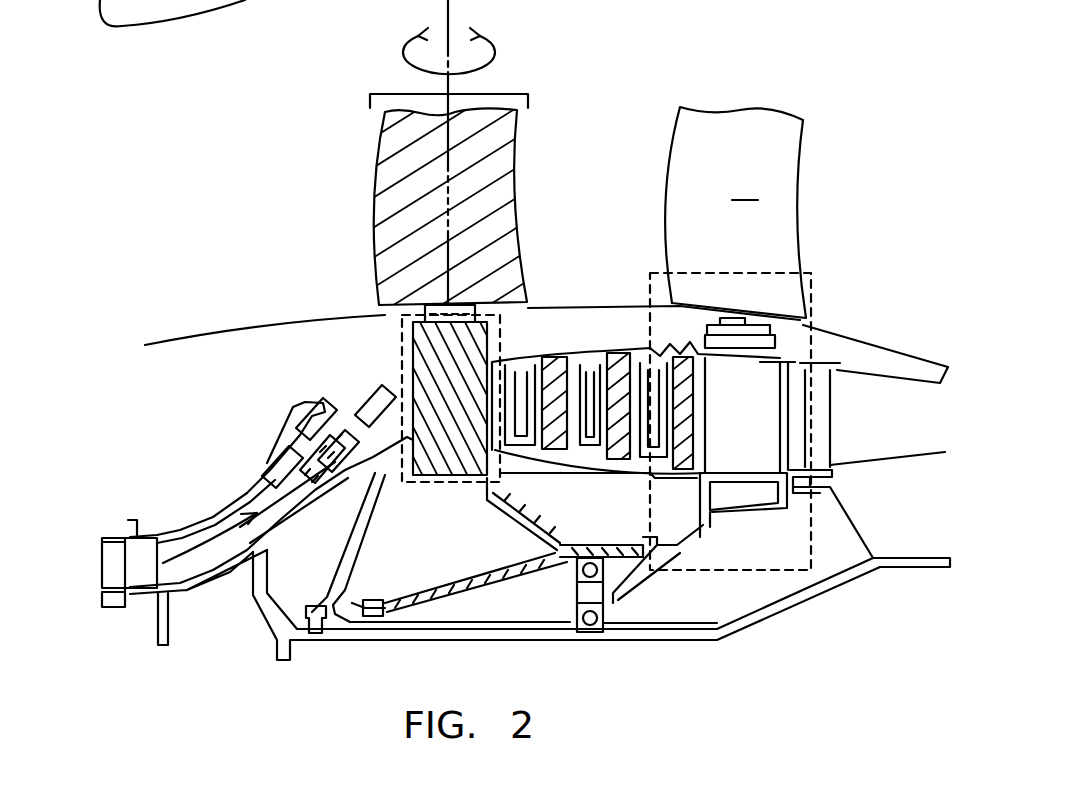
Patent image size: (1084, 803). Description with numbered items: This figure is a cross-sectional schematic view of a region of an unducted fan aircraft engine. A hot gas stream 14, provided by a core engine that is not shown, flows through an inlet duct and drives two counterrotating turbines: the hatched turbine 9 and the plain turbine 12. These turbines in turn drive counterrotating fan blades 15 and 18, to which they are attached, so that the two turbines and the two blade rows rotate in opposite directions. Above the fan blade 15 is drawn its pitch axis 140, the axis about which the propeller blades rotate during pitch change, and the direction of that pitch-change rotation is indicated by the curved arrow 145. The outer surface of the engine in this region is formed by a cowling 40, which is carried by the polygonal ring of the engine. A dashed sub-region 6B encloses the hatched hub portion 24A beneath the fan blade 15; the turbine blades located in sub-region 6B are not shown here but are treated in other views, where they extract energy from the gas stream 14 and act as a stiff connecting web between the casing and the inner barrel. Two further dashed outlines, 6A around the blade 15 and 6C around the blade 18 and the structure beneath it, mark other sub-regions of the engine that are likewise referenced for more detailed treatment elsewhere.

The pitch axis 140 is at (446, 5).
The arrow 145 is at (402, 54).
The fan blade section region 6A is at (455, 93).
The fan blades 15 is at (520, 170).
The fan blades 18 is at (735, 227).
The stator region 6C is at (736, 273).
The cowling 40 is at (278, 318).
The sub-region 6B is at (402, 346).
The rotor hub 24A is at (418, 482).
The counterrotating turbine 9 is at (552, 358).
The counterrotating turbine 12 is at (598, 372).
The hot gas stream 14 is at (192, 556).